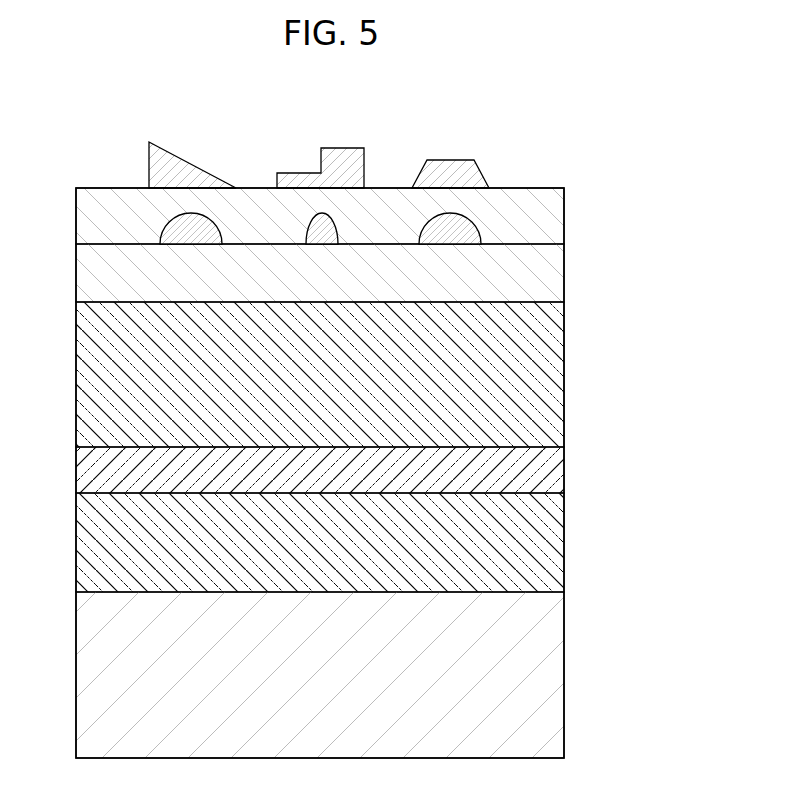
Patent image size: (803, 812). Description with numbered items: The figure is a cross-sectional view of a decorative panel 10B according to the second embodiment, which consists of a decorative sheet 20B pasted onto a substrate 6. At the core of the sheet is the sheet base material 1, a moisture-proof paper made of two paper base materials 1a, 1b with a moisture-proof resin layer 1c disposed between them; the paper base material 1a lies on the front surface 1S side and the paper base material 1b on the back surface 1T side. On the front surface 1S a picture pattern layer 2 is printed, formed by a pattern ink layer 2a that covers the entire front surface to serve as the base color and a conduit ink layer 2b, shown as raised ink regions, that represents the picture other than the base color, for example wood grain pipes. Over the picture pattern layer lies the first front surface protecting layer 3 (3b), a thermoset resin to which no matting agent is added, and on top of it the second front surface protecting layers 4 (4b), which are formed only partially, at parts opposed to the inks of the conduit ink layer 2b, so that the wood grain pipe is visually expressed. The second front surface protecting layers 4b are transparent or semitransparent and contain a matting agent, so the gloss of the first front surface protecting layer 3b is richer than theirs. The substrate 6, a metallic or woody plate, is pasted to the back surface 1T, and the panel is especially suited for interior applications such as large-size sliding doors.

The decorative panel 10B is at (102, 118).
The decorative sheet 20B is at (648, 127).
The sheet base material 1 is at (618, 378).
The paper base material 1a is at (560, 398).
The paper base material 1b is at (560, 540).
The moisture-proof resin layer 1c is at (560, 470).
The front surface 1S is at (92, 302).
The back surface 1T is at (92, 592).
The picture pattern layer 2 is at (618, 208).
The pattern ink layer 2a is at (560, 288).
The conduit ink layer 2b is at (472, 230).
The first front surface protecting layer 3 is at (618, 163).
The first front surface protecting layer 3b is at (558, 203).
The second front surface protecting layer 4 is at (618, 123).
The second front surface protecting layer 4b is at (203, 172).
The substrate 6 is at (560, 667).